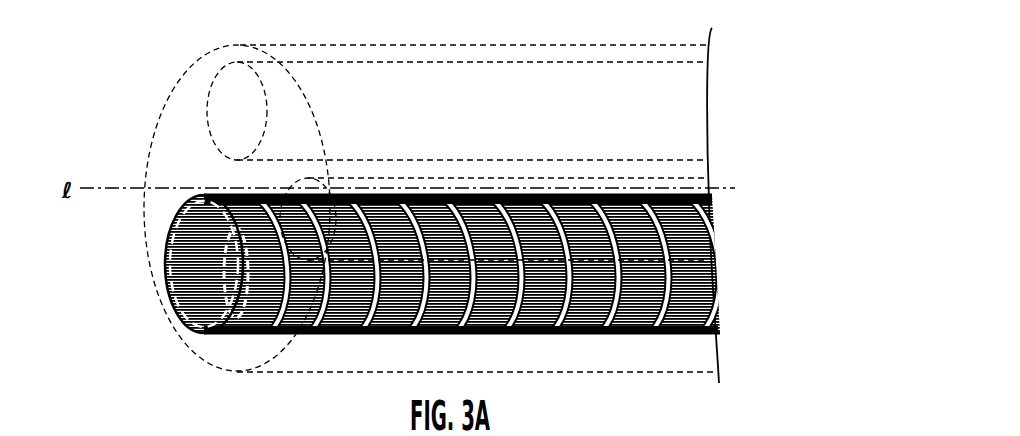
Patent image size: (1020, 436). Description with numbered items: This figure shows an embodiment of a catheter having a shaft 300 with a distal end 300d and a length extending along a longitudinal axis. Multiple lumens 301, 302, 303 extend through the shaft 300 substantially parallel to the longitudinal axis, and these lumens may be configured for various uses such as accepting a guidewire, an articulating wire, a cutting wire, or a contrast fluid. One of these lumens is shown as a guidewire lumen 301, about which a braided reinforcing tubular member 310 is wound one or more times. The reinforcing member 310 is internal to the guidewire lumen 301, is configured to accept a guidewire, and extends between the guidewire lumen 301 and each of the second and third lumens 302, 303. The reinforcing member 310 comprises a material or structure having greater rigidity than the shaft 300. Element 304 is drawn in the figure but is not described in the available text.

The shaft 300 is at (630, 45).
The distal end 300d is at (198, 62).
The guidewire lumen 301 is at (197, 267).
The second lumen 302 is at (245, 107).
The third lumen 303 is at (322, 333).
The inner liner 304 is at (173, 318).
The braided reinforcing tubular member 310 is at (198, 334).